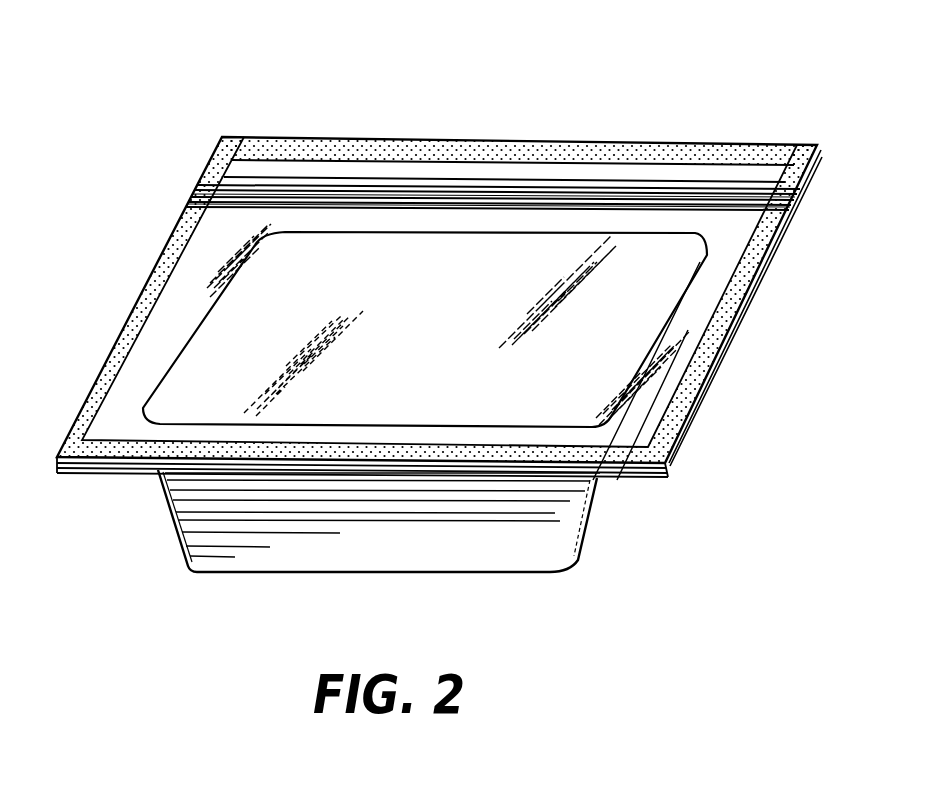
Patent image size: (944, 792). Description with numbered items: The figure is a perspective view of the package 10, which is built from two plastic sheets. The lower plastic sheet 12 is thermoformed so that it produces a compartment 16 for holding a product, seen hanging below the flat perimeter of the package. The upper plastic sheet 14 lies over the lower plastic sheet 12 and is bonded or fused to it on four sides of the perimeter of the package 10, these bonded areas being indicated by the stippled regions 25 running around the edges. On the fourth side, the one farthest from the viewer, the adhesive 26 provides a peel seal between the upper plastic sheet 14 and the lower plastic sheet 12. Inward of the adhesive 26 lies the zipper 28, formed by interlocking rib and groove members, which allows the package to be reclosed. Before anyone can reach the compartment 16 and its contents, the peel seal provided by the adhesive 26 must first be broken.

The package 10 is at (112, 310).
The lower plastic sheet 12 is at (135, 472).
The upper plastic sheet 14 is at (120, 400).
The compartment 16 is at (492, 553).
The regions 25 is at (177, 243).
The adhesive 26 is at (808, 178).
The zipper 28 is at (787, 227).